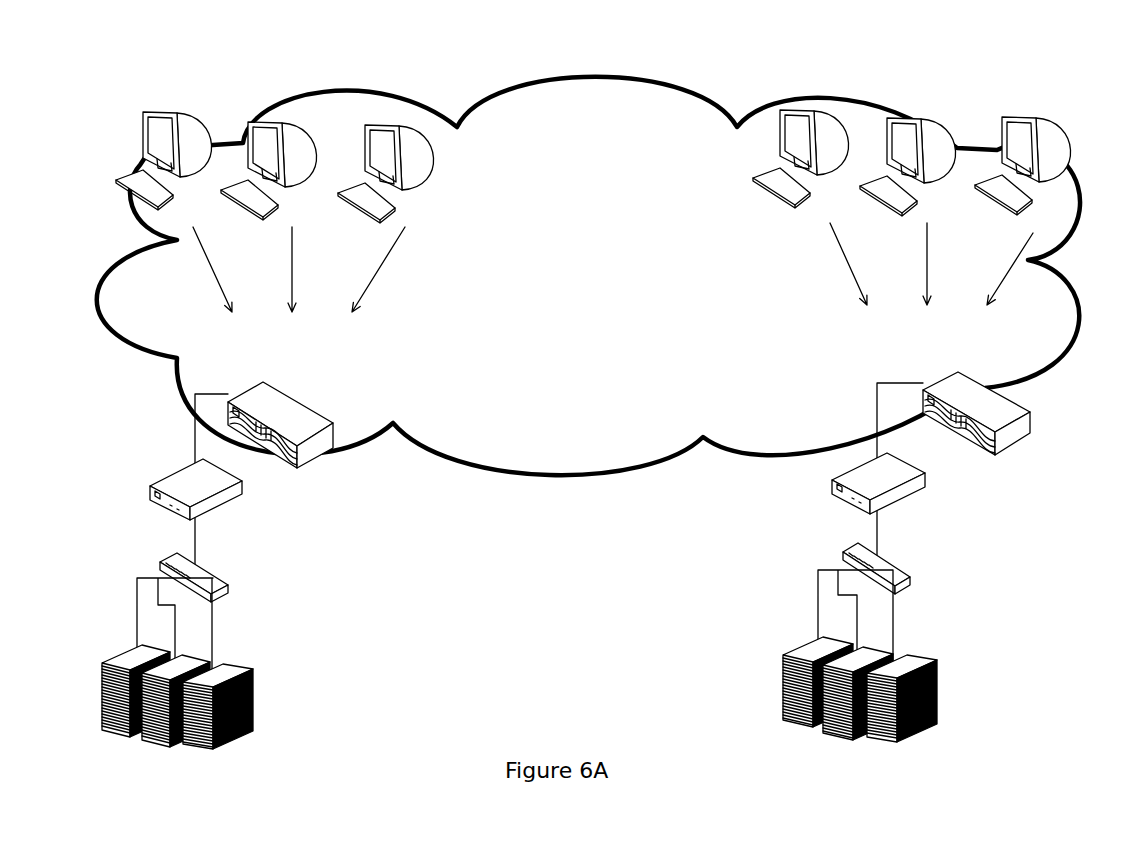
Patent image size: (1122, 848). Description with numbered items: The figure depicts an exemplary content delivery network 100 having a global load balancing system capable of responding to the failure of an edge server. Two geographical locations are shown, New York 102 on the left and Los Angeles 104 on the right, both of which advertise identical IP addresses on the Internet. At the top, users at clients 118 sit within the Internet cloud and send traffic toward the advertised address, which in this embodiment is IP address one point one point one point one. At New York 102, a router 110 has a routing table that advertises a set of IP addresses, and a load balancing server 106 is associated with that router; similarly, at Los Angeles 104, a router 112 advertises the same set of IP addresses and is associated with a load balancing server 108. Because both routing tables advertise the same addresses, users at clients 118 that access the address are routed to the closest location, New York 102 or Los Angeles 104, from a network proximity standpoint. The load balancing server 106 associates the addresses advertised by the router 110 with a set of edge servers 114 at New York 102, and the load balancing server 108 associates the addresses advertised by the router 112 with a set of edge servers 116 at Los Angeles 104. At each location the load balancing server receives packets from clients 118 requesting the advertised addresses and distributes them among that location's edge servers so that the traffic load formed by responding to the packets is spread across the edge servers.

The content delivery network 100 is at (587, 415).
The New York location 102 is at (239, 583).
The Los Angeles location 104 is at (928, 574).
The load balancing server 106 is at (163, 477).
The load balancing server 108 is at (832, 480).
The router 110 is at (320, 408).
The router 112 is at (1023, 400).
The set of edge servers 114 is at (245, 757).
The set of edge servers 116 is at (933, 752).
The clients 118 is at (570, 70).